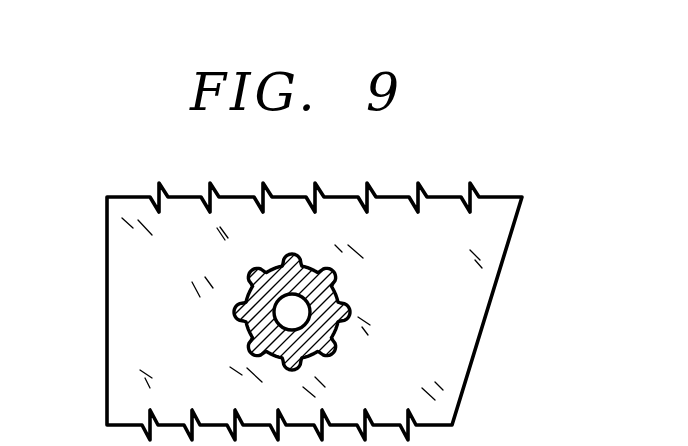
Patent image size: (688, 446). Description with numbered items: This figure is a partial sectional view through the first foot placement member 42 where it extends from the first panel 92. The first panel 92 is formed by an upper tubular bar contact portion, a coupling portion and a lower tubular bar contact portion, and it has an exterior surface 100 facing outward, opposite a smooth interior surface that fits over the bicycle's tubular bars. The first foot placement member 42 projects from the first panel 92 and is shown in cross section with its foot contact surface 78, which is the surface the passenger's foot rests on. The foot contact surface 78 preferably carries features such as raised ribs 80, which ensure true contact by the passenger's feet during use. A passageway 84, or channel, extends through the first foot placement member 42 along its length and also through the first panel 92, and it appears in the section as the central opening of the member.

The exterior surface 100 is at (463, 242).
The first panel 92 is at (448, 342).
The first foot placement member 42 is at (336, 294).
The passageway 84 is at (292, 312).
The raised ribs 80 is at (290, 257).
The foot contact surface 78 is at (296, 257).